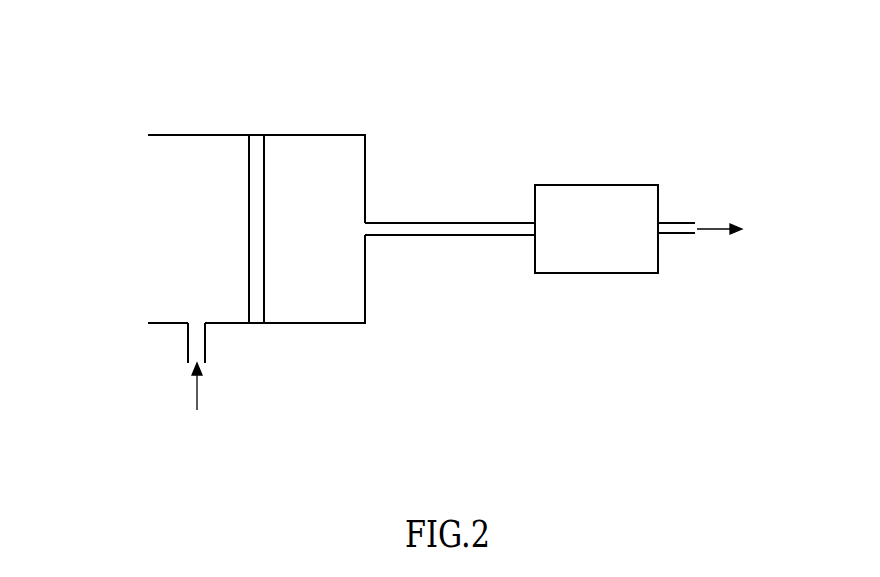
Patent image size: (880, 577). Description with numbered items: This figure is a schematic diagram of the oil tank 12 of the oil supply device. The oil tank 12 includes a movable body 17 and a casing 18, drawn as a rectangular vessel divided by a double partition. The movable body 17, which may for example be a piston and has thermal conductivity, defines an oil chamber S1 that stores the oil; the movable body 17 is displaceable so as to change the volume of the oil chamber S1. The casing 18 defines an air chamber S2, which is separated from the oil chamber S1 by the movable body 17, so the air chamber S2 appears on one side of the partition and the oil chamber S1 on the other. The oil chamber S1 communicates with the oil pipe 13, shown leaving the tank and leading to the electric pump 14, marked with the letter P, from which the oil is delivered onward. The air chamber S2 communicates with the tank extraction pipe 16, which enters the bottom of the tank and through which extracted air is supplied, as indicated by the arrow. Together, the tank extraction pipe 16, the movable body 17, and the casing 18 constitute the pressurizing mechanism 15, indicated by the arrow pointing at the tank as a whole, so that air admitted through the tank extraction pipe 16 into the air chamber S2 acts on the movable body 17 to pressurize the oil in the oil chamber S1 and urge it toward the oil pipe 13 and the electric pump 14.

The oil tank 12 is at (278, 161).
The oil pipe 13 is at (438, 222).
The electric pump 14 is at (622, 185).
The pressurizing mechanism 15 is at (107, 178).
The tank extraction pipe 16 is at (187, 344).
The movable body 17 is at (256, 153).
The casing 18 is at (226, 134).
The oil chamber S1 is at (318, 272).
The air chamber S2 is at (157, 244).